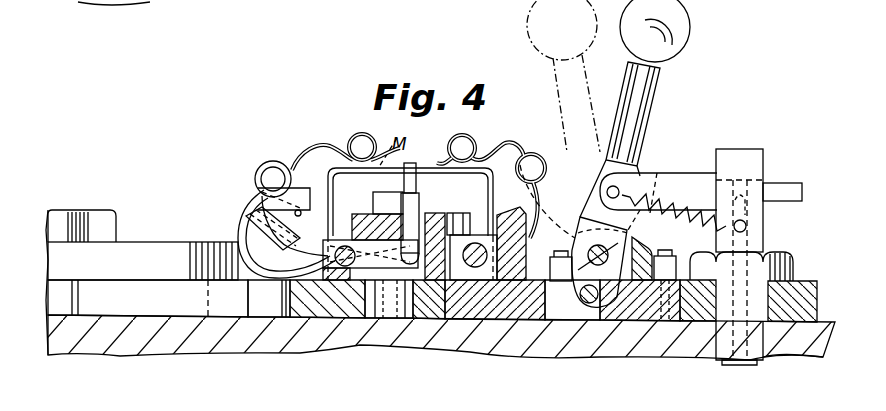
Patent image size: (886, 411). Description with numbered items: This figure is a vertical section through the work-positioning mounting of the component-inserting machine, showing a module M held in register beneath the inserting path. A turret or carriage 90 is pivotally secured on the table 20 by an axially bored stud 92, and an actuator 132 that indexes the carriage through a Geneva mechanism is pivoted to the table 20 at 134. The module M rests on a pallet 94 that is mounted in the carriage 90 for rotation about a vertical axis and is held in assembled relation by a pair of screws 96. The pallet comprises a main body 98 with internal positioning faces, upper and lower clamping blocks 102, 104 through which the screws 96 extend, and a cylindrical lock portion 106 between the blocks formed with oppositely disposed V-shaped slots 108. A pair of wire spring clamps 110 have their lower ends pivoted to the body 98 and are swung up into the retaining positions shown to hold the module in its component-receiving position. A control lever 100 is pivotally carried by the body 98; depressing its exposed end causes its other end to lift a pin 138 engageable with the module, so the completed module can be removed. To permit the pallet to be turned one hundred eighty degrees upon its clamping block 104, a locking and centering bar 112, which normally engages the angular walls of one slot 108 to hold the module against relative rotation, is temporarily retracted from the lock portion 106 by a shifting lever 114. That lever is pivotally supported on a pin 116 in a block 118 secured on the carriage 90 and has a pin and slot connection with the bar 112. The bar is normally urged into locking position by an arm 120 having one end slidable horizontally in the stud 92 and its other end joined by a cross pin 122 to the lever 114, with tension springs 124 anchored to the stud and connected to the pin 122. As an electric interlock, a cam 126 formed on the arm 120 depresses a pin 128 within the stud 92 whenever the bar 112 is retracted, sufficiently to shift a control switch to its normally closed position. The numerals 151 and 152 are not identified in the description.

The table 20 is at (124, 299).
The turret or carriage 90 is at (807, 281).
The axially bored stud 92 is at (730, 150).
The pallet 94 is at (230, 214).
The screws 96 is at (373, 194).
The main body 98 is at (527, 218).
The control lever 100 is at (256, 183).
The upper clamping block 102 is at (430, 213).
The lower clamping block 104 is at (338, 352).
The cylindrical lock portion 106 is at (292, 299).
The V-shaped slots 108 is at (461, 239).
The wire spring clamps 110 is at (305, 143).
The locking and centering bar 112 is at (537, 262).
The shifting lever 114 is at (627, 92).
The pin 116 is at (629, 232).
The block 118 is at (651, 249).
The arm 120 is at (646, 172).
The cross pin 122 is at (603, 188).
The tension springs 124 is at (668, 200).
The cam 126 is at (750, 210).
The pin 128 is at (750, 236).
The actuator 132 is at (137, 238).
The pivot of actuator 134 is at (79, 212).
The pin 138 is at (420, 190).
The screw 151 is at (768, 360).
The element 152 is at (90, 6).